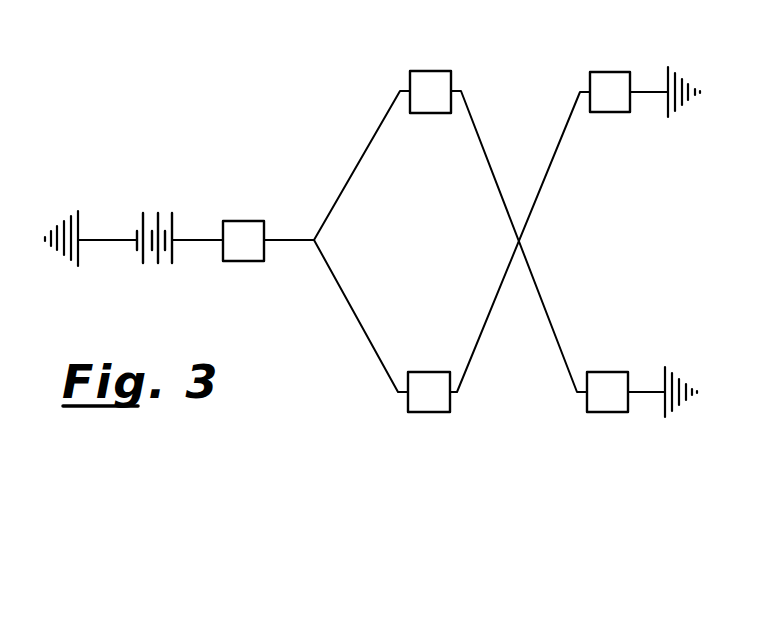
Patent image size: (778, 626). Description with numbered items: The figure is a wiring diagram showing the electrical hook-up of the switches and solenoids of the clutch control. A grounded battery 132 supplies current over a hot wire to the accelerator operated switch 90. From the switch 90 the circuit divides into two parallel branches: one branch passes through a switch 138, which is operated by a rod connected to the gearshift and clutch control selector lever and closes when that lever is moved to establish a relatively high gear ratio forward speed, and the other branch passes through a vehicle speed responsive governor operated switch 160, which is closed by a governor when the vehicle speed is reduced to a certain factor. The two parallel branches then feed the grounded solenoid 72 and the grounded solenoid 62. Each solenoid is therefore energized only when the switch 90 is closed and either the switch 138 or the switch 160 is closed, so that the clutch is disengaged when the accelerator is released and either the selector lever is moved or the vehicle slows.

The grounded battery 132 is at (148, 221).
The accelerator operated switch 90 is at (247, 256).
The vehicle speed responsive governor operated switch 160 is at (421, 75).
The switch 138 is at (440, 407).
The grounded solenoid 62 is at (603, 78).
The grounded solenoid 72 is at (615, 407).